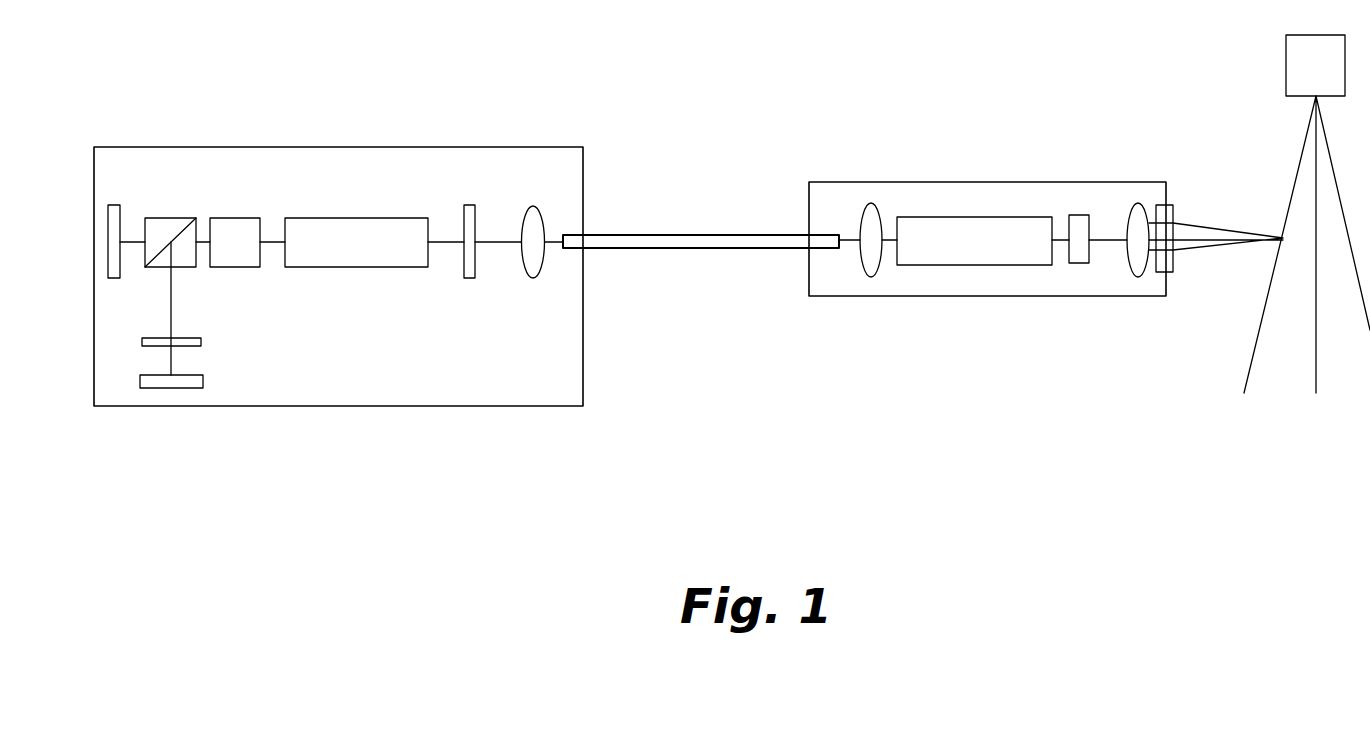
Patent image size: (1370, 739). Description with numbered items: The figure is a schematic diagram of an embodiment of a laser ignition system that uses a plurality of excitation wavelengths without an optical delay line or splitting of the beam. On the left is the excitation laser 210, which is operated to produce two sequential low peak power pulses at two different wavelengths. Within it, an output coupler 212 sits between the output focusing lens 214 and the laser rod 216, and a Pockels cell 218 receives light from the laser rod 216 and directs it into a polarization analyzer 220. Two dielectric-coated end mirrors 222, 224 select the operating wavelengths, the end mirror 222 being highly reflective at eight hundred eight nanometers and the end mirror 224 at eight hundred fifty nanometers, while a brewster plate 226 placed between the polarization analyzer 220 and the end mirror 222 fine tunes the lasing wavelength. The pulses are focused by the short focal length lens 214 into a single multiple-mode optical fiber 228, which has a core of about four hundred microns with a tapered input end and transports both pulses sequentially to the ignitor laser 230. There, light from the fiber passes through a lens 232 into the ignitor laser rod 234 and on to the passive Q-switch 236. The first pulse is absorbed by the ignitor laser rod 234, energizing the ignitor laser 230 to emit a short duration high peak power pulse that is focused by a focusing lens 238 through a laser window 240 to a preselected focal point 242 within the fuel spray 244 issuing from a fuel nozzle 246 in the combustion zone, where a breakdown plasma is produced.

The excitation laser 210 is at (251, 147).
The output coupler 212 is at (470, 205).
The output focusing lens 214 is at (539, 212).
The laser rod 216 is at (375, 217).
The Pockels cell 218 is at (245, 217).
The polarization analyzer 220 is at (168, 218).
The end mirror 222 is at (203, 378).
The end mirror 224 is at (122, 273).
The brewster plate 226 is at (187, 338).
The multiple-mode optical fiber 228 is at (737, 235).
The ignitor laser 230 is at (1022, 182).
The lens 232 is at (859, 230).
The ignitor laser rod 234 is at (1017, 217).
The passive Q-switch 236 is at (1078, 215).
The focusing lens 238 is at (1126, 248).
The laser window 240 is at (1169, 205).
The focal point 242 is at (1294, 240).
The fuel spray 244 is at (1298, 162).
The fuel nozzle 246 is at (1286, 65).